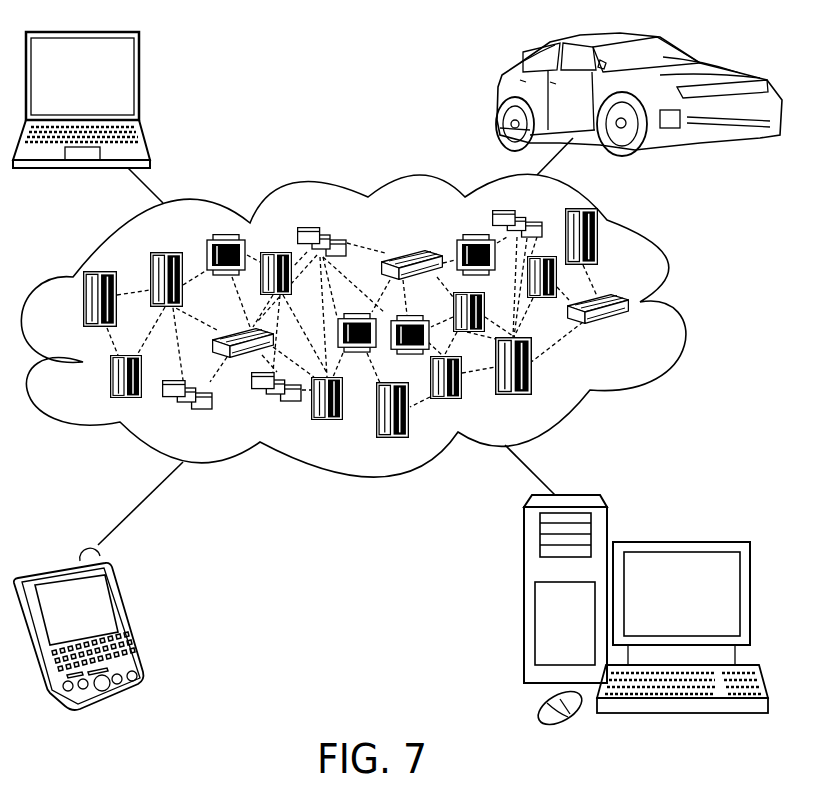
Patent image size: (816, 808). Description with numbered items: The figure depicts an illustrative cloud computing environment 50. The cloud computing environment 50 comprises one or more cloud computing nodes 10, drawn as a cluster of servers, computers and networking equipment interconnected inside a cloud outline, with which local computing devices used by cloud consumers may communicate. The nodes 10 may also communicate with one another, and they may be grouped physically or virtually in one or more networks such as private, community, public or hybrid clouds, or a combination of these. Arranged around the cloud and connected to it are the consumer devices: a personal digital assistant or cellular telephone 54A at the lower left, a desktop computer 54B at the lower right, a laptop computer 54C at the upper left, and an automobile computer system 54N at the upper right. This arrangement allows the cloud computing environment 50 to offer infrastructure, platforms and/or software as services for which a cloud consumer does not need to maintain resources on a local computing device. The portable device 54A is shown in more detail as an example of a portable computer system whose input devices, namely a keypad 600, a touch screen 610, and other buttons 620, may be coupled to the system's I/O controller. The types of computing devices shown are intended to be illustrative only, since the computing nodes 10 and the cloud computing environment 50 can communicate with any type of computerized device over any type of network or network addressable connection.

The cloud computing nodes 10 is at (638, 336).
The cloud computing environment 50 is at (683, 306).
The personal digital assistant or cellular telephone 54A is at (134, 627).
The desktop computer 54B is at (680, 542).
The laptop computer 54C is at (140, 83).
The automobile computer system 54N is at (497, 94).
The keypad 600 is at (133, 653).
The touch screen 610 is at (102, 598).
The buttons 620 is at (104, 683).